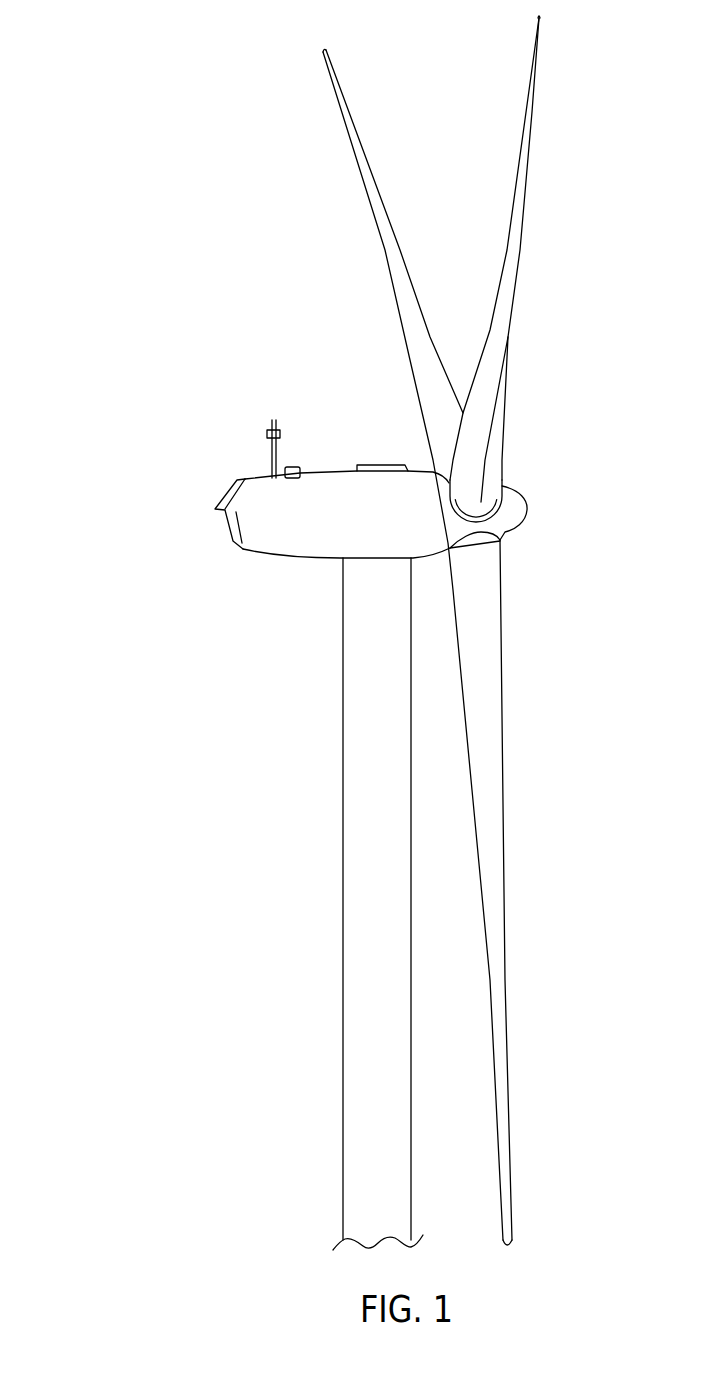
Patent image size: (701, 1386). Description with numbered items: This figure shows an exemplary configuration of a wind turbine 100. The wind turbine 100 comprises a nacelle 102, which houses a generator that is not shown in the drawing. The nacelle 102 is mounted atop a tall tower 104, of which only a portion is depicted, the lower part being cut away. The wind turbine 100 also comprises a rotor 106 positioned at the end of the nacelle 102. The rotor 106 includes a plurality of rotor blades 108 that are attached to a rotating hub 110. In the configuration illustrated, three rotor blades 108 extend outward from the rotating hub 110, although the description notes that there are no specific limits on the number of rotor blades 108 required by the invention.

The wind turbine 100 is at (179, 273).
The nacelle 102 is at (290, 557).
The tower 104 is at (343, 847).
The rotor 106 is at (602, 303).
The rotor blades 108 is at (363, 137).
The rotating hub 110 is at (520, 523).